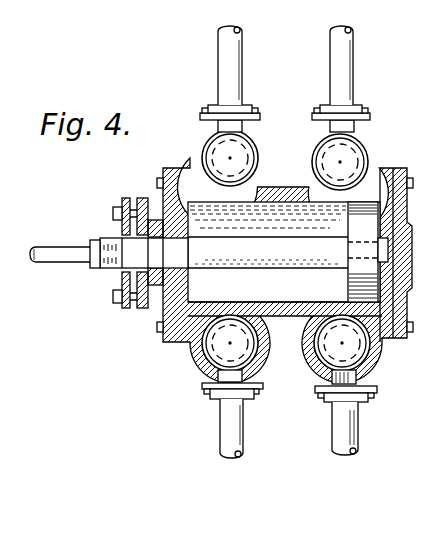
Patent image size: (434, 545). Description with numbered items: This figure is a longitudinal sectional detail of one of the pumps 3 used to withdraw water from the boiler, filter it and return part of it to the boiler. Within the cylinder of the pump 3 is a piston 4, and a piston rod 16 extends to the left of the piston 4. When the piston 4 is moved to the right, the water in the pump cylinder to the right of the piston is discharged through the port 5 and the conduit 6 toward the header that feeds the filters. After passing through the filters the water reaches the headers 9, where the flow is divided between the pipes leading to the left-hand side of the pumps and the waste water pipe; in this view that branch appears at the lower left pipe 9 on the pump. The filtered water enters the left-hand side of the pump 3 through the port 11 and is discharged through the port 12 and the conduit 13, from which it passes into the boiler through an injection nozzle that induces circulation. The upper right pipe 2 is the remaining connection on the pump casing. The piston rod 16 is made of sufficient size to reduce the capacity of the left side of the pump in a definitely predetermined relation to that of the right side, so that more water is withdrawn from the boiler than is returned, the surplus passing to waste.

The pipe 2 is at (348, 58).
The pump 3 is at (293, 314).
The piston 4 is at (353, 217).
The port 5 is at (376, 350).
The conduit 6 is at (355, 421).
The header 9 is at (230, 433).
The port 11 is at (195, 355).
The port 12 is at (273, 138).
The conduit 13 is at (233, 43).
The piston rod 16 is at (120, 268).